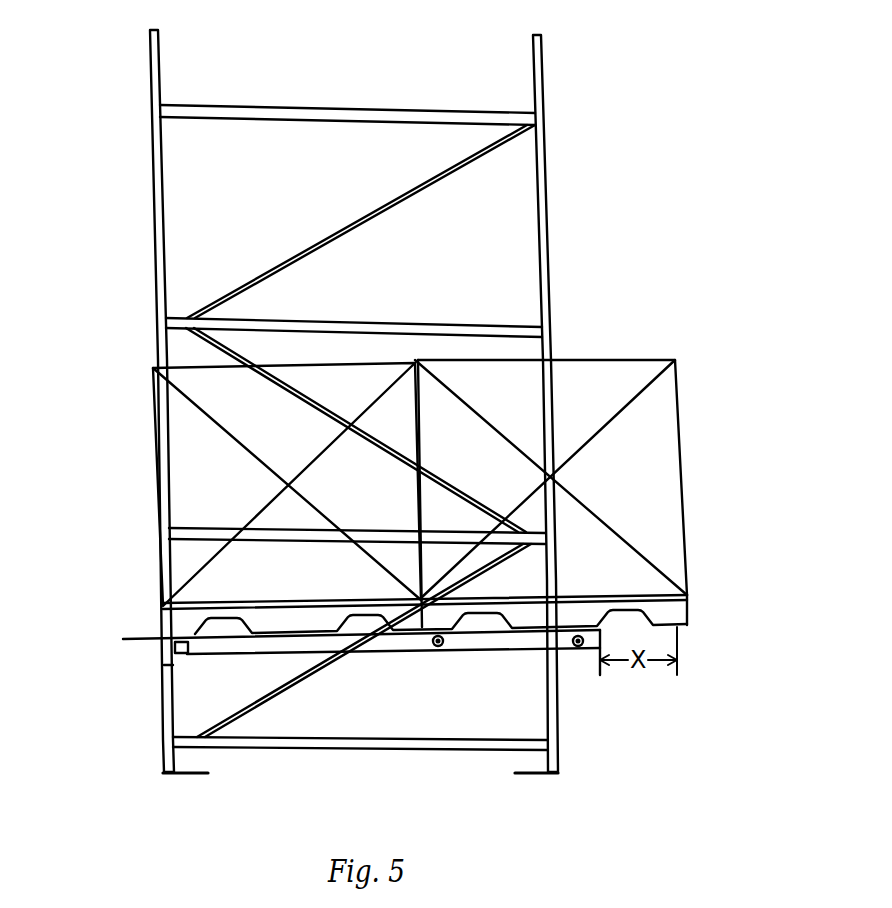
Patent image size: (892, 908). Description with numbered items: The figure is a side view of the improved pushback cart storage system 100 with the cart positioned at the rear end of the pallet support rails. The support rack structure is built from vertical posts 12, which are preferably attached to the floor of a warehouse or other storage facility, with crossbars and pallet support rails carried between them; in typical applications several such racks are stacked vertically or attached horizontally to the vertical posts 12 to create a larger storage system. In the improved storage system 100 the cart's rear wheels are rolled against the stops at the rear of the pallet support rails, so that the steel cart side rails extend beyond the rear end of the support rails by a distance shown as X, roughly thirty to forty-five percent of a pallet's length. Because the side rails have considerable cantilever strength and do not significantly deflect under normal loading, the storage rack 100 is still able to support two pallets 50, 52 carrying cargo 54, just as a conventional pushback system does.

The improved pushback cart storage system 100 is at (620, 170).
The vertical posts 12 is at (167, 702).
The pallet 50 is at (187, 622).
The pallet 52 is at (673, 612).
The cargo 54 is at (187, 460).